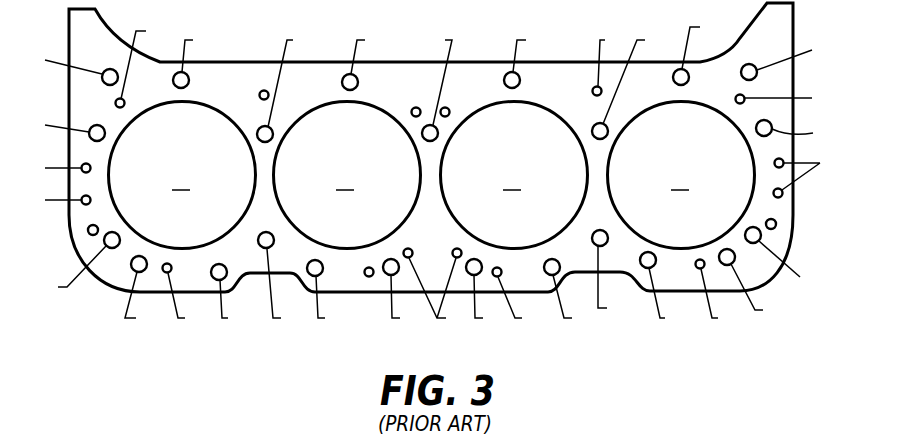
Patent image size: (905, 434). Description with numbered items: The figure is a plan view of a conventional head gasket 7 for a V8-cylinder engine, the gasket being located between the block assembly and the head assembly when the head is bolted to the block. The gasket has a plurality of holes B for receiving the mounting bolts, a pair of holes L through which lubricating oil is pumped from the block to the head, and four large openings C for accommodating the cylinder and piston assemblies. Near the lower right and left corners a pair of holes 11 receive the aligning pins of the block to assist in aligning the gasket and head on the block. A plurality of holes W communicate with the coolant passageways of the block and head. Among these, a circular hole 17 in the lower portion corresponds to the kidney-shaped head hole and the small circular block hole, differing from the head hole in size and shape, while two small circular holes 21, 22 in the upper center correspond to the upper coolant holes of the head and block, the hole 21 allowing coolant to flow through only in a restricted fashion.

The head gasket 7 is at (802, 209).
The holes 11 is at (88, 231).
The circular hole 17 is at (369, 277).
The small circular hole 21 is at (264, 90).
The small circular hole 22 is at (447, 107).